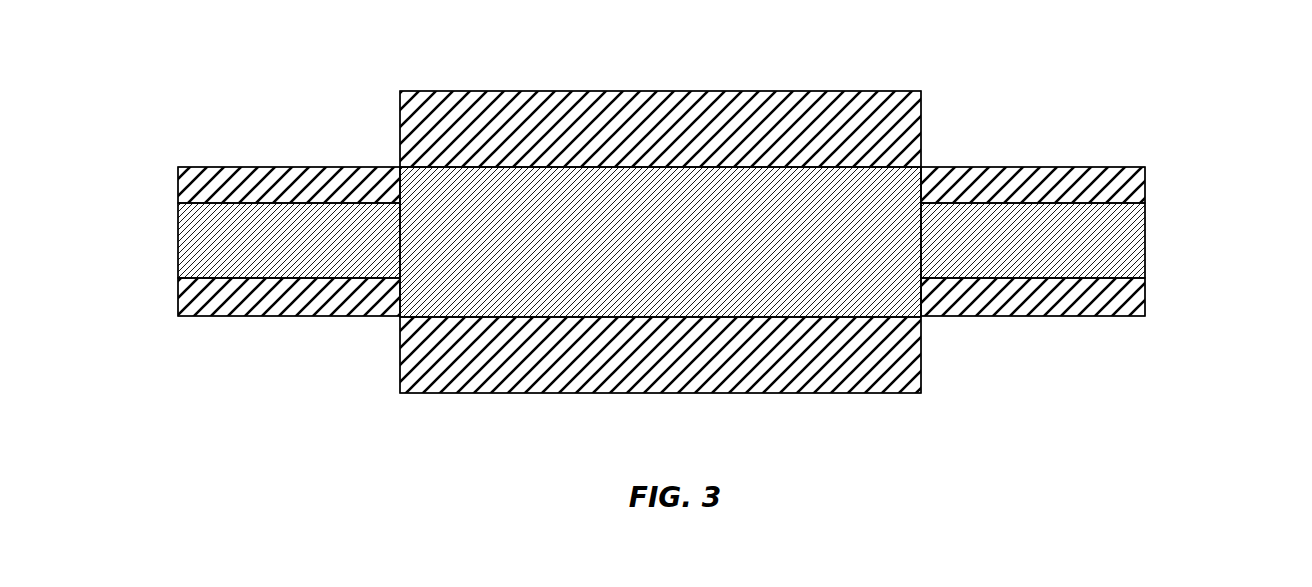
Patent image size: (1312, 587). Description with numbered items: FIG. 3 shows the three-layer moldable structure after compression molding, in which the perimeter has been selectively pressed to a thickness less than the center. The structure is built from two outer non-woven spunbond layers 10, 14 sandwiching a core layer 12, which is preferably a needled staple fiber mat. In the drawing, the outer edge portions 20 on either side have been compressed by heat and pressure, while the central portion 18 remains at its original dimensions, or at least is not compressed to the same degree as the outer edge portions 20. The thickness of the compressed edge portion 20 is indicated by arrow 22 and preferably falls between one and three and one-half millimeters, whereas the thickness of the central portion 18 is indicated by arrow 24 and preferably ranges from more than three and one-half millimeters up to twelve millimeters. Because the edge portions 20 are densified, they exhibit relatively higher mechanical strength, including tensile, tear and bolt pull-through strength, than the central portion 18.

The non-woven spunbond layer 10 is at (681, 216).
The core layer 12 is at (1150, 225).
The non-woven spunbond layer 14 is at (183, 321).
The central portion 18 is at (403, 65).
The outer edge portion 20 is at (400, 333).
The arrow indicating edge portion thickness 22 is at (163, 170).
The arrow indicating central portion thickness 24 is at (797, 93).